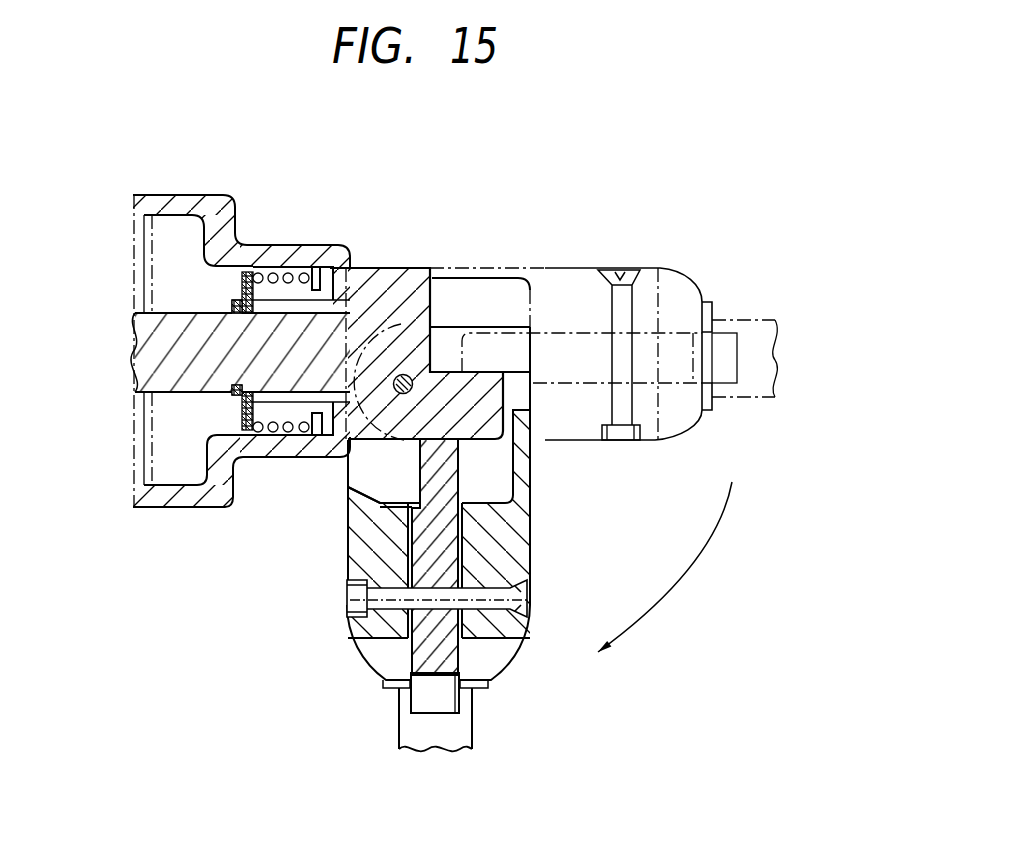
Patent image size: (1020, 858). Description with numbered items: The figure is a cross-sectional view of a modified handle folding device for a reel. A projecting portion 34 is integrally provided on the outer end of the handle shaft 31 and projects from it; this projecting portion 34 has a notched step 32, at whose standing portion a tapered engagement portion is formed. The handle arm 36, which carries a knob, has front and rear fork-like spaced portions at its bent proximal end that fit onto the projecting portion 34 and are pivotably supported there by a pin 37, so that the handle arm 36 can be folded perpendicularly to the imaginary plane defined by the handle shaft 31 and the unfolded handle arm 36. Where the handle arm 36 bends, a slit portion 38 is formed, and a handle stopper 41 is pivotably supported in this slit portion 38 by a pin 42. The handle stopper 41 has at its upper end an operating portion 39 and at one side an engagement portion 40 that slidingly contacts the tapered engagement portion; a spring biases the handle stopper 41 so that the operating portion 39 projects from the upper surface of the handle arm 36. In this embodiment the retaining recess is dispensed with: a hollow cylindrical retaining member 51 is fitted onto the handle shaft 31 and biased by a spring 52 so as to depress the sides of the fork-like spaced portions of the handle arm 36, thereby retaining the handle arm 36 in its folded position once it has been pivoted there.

The handle shaft 31 is at (178, 364).
The notched step 32 is at (432, 300).
The projecting portion 34 is at (447, 370).
The handle arm 36 is at (467, 724).
The pin 37 is at (398, 373).
The slit portion 38 is at (463, 568).
The operating portion 39 is at (422, 698).
The engagement portion 40 is at (418, 461).
The handle stopper 41 is at (450, 537).
The pin 42 is at (388, 602).
The hollow cylindrical retaining member 51 is at (326, 254).
The spring 52 is at (288, 272).